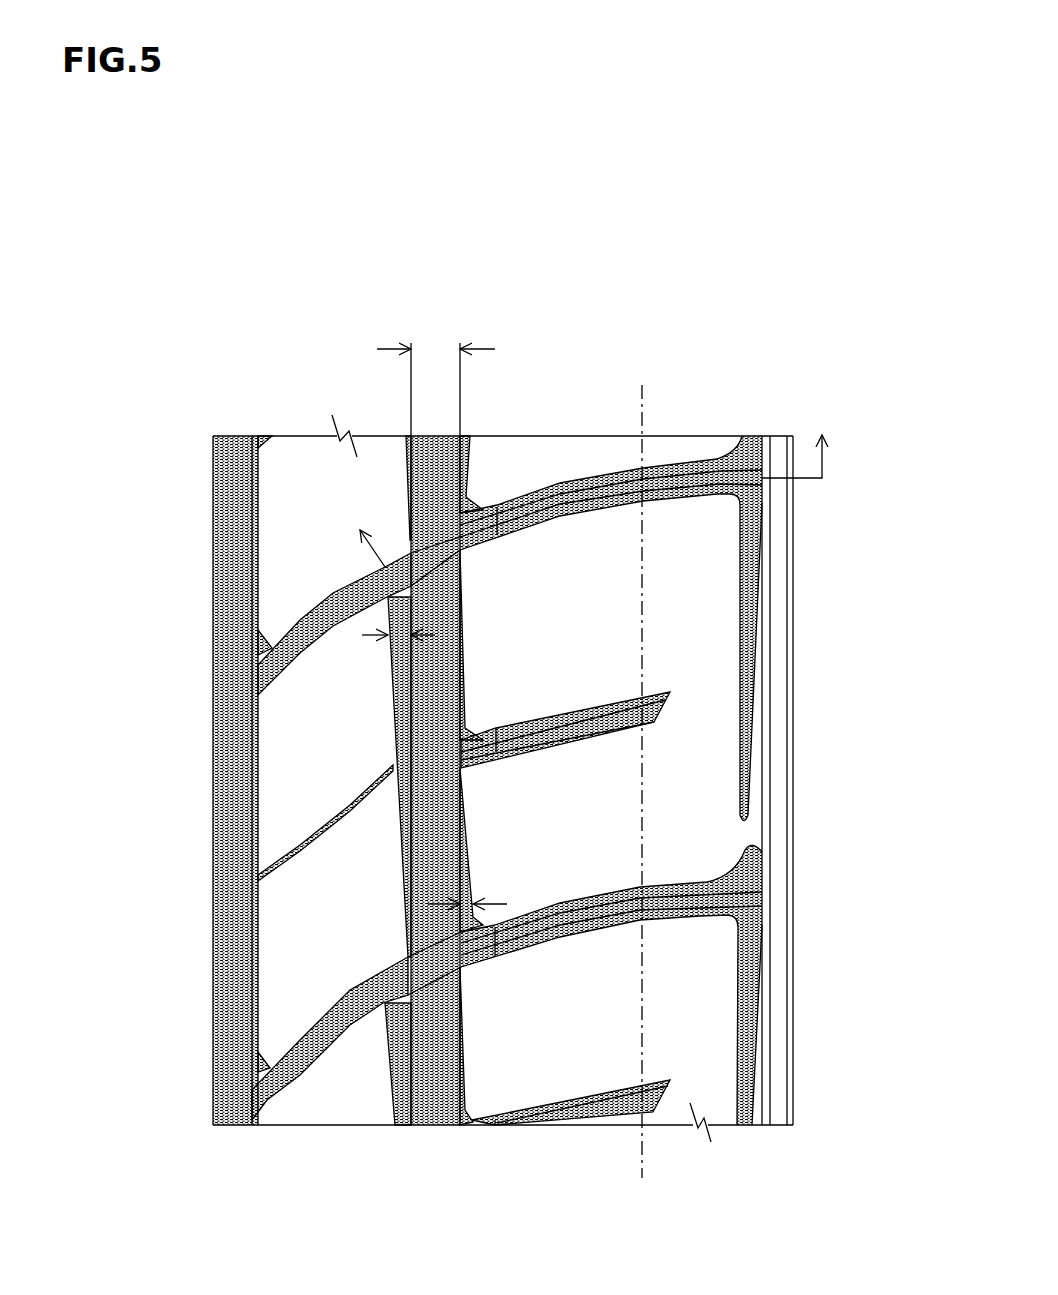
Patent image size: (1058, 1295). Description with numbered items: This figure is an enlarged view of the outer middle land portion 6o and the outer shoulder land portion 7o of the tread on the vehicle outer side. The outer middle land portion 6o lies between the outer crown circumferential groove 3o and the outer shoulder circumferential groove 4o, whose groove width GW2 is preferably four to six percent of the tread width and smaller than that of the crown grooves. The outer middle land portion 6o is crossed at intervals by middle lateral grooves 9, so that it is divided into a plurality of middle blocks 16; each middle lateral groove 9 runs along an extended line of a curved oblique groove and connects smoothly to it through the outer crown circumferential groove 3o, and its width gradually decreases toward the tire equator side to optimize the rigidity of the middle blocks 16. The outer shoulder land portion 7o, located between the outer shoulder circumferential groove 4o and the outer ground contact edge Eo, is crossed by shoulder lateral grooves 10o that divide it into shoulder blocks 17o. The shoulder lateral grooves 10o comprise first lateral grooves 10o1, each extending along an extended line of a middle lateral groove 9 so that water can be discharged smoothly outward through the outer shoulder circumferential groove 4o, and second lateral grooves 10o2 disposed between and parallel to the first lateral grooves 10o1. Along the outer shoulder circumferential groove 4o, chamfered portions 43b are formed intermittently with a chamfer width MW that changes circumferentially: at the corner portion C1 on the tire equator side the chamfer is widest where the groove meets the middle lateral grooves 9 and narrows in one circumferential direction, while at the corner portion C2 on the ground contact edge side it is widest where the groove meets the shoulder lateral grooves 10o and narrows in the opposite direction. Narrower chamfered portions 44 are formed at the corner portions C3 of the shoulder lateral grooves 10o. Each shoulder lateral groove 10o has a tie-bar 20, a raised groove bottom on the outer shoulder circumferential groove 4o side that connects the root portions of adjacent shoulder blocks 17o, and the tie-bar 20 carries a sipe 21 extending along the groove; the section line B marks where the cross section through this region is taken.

The outer crown circumferential groove 3o is at (240, 453).
The outer shoulder circumferential groove 4o is at (432, 1097).
The outer middle land portion 6o is at (312, 365).
The outer shoulder land portion 7o is at (572, 390).
The middle lateral groove 9 is at (315, 617).
The middle block 16 is at (316, 547).
The shoulder block 17o is at (588, 607).
The tie-bar 20 is at (490, 513).
The sipe 21 is at (485, 740).
The chamfered portion 43b is at (286, 777).
The corner portion on the tire equator side C1 is at (398, 690).
The corner portion on the ground contact edge side C2 is at (463, 868).
The corner portion of the shoulder lateral groove C3 is at (673, 883).
The chamfered portion 44 is at (684, 973).
The shoulder lateral groove 10o is at (700, 825).
The first lateral groove 10o1 is at (598, 913).
The second lateral groove 10o2 is at (593, 718).
The chamfer width MW is at (432, 769).
The groove width of the shoulder circumferential groove GW2 is at (436, 377).
The outer ground contact edge Eo is at (644, 767).
The section line B- B is at (588, 485).